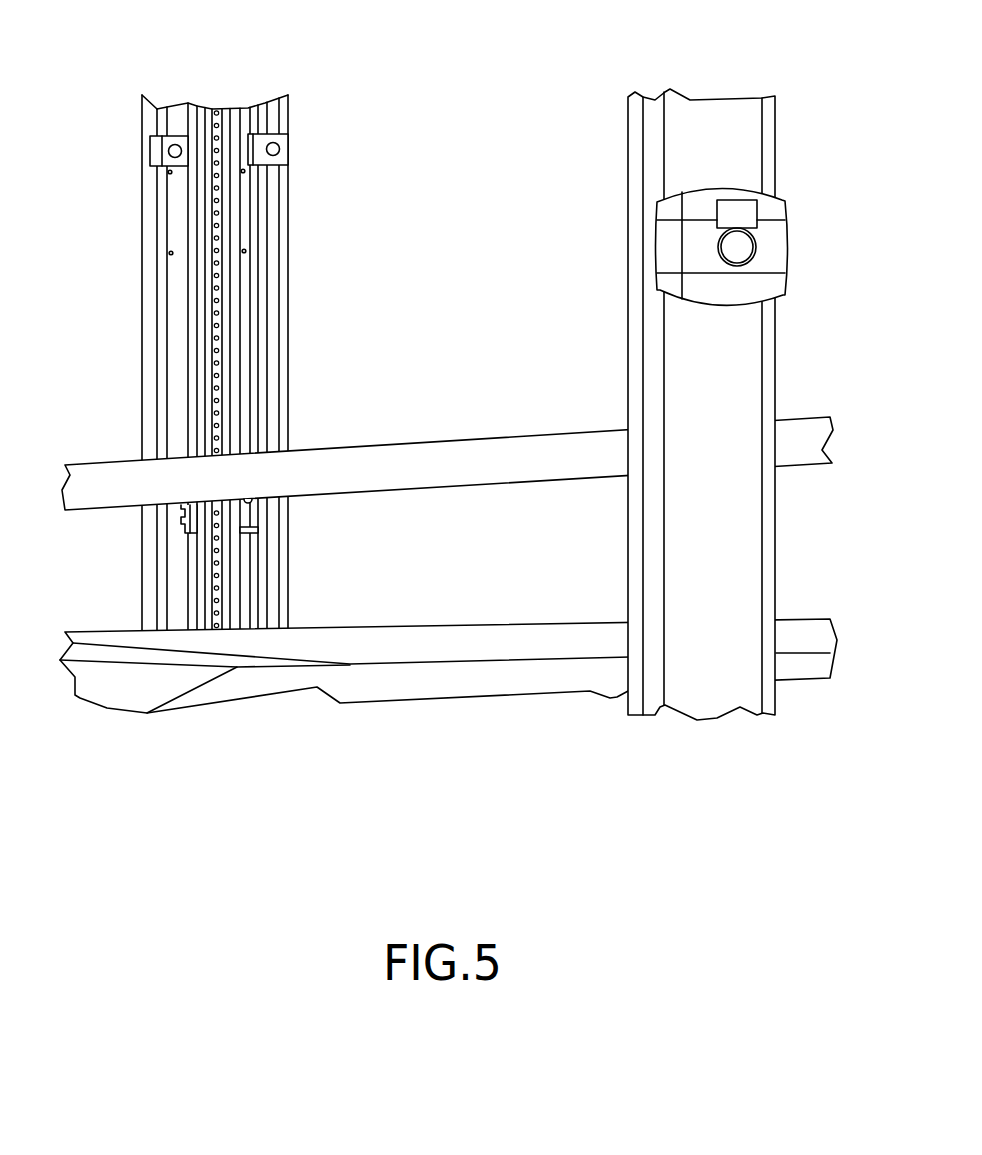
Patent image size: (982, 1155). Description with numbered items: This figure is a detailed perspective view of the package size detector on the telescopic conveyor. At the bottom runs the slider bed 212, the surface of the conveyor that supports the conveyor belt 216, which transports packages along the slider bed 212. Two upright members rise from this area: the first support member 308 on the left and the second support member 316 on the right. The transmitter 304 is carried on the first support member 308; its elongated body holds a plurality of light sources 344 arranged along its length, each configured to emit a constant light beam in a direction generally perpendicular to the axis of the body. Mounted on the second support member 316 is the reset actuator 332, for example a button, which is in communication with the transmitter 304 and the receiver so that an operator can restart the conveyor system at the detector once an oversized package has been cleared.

The slider bed 212 is at (528, 642).
The conveyor belt 216 is at (115, 483).
The transmitter 304 is at (203, 258).
The first support member 308 is at (150, 120).
The second support member 316 is at (728, 123).
The reset actuator 332 is at (793, 236).
The light sources 344 is at (217, 188).